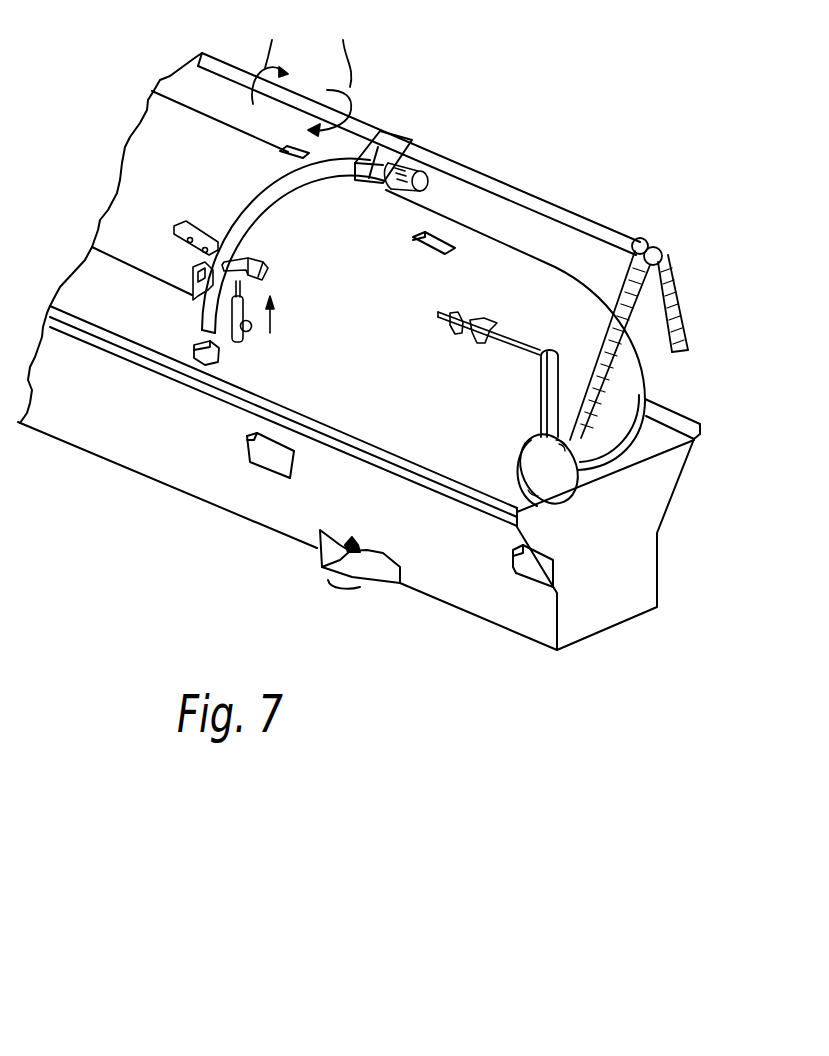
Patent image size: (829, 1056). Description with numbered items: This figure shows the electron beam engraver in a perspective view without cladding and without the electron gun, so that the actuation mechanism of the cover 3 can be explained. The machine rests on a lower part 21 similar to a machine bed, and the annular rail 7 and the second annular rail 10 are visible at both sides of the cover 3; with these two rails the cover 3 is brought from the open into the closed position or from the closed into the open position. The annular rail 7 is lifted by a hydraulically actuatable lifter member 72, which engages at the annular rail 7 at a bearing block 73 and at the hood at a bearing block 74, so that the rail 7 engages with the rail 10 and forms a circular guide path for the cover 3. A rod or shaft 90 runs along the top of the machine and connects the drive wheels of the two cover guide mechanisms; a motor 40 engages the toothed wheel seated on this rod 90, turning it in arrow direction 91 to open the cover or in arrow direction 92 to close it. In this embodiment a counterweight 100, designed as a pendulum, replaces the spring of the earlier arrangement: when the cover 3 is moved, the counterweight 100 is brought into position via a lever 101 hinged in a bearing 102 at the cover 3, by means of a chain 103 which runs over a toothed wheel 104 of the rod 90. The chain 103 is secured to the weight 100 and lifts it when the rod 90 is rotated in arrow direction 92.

The cover 3 is at (147, 182).
The annular rail 7 is at (244, 203).
The second annular rail 10 is at (205, 305).
The lower part 21 is at (208, 479).
The motor 40 is at (427, 182).
The lifter member 72 is at (280, 324).
The bearing block 73 is at (263, 262).
The bearing block 74 is at (238, 334).
The shaft 90 is at (488, 187).
The arrow direction 91 is at (330, 80).
The arrow direction 92 is at (270, 60).
The counterweight 100 is at (540, 467).
The lever 101 is at (552, 385).
The bearing 102 is at (478, 313).
The chain 103 is at (667, 293).
The toothed wheel 104 is at (658, 250).